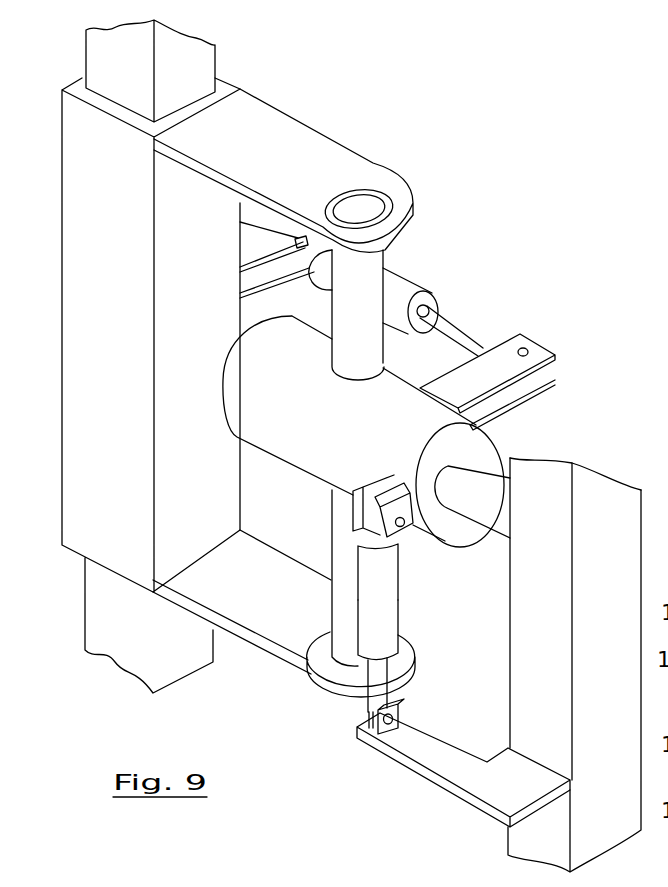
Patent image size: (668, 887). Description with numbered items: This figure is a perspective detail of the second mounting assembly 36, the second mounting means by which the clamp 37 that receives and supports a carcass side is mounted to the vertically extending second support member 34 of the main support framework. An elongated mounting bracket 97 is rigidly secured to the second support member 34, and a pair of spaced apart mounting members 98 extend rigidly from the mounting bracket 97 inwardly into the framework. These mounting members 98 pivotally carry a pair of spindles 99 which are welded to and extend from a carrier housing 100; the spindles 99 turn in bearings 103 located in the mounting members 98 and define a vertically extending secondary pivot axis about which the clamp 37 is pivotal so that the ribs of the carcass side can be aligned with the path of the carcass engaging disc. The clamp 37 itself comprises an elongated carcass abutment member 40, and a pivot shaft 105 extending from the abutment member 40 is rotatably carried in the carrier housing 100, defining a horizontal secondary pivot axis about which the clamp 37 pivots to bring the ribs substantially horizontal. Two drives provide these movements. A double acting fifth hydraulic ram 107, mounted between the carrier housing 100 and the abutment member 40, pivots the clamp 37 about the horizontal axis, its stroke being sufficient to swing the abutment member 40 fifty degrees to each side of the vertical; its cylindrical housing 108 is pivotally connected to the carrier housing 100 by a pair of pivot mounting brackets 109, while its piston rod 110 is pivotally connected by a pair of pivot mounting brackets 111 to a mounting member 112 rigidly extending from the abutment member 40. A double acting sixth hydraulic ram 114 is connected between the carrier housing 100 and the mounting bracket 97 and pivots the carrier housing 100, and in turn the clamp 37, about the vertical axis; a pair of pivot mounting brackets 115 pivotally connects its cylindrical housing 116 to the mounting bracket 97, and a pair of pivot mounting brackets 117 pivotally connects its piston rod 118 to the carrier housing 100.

The second support member 34 is at (201, 68).
The second mounting assembly 36 is at (518, 164).
The clamp 37 is at (625, 488).
The carcass abutment member 40 is at (593, 478).
The mounting bracket 97 is at (75, 155).
The mounting members 98 is at (310, 148).
The spindles 99 is at (372, 274).
The carrier housing 100 is at (272, 437).
The bearings 103 is at (384, 197).
The pivot shaft 105 is at (485, 520).
The fifth hydraulic ram 107 is at (390, 608).
The cylindrical housing 108 is at (390, 577).
The pivot mounting brackets 109 is at (380, 490).
The piston rod 110 is at (368, 698).
The pivot mounting brackets 111 is at (397, 712).
The mounting member 112 is at (440, 768).
The sixth hydraulic ram 114 is at (409, 287).
The pivot mounting brackets 115 is at (253, 247).
The cylindrical housing 116 is at (440, 303).
The pivot mounting brackets 117 is at (500, 375).
The piston rod 118 is at (470, 340).